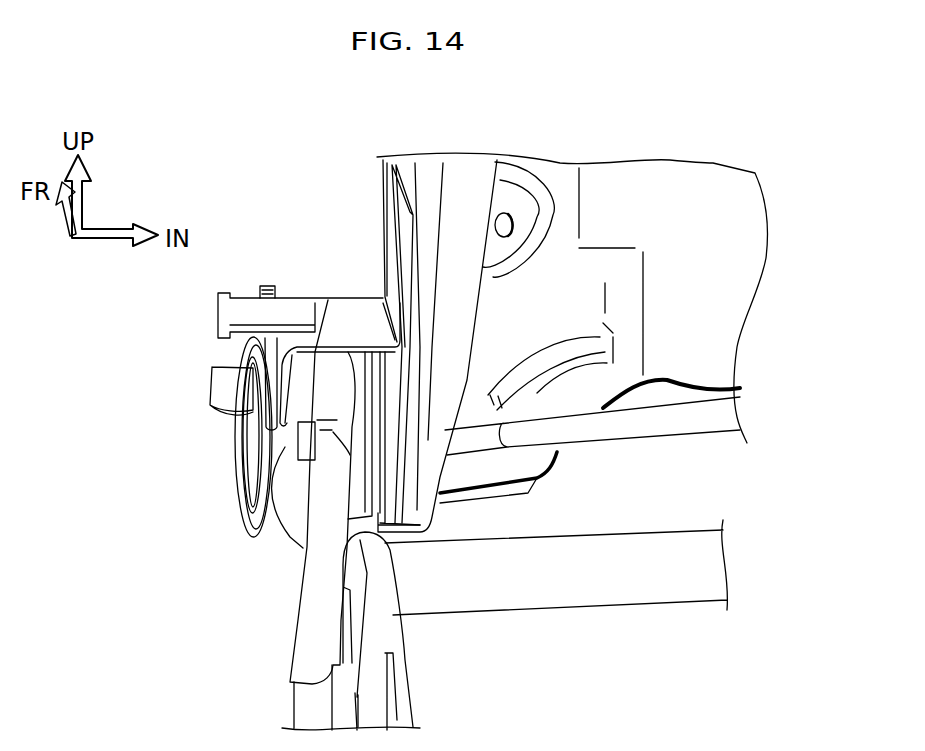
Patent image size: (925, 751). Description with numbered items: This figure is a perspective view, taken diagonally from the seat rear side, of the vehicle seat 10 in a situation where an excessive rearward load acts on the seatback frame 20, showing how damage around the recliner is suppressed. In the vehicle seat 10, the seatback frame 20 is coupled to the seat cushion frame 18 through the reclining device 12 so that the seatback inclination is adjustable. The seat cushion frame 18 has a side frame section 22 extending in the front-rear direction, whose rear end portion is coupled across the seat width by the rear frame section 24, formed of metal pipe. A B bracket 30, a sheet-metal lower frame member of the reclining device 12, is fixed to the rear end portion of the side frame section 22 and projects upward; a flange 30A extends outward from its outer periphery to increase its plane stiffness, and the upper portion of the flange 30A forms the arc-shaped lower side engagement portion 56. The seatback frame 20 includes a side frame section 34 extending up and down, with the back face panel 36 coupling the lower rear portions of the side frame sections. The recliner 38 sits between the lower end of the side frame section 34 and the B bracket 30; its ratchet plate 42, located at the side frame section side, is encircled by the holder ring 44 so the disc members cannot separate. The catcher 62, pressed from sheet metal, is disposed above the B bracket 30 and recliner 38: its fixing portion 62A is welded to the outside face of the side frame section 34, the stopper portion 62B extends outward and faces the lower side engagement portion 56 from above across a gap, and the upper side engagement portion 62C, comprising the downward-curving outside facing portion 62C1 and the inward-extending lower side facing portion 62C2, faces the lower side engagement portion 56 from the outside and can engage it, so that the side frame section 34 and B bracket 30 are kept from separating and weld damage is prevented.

The vehicle seat 10 is at (797, 268).
The reclining device 12 is at (285, 182).
The seat cushion frame 18 is at (548, 613).
The seatback frame 20 is at (631, 186).
The side frame section 22 is at (387, 653).
The rear frame section 24 is at (613, 607).
The B bracket 30 is at (298, 548).
The flange 30A is at (310, 608).
The side frame section 34 is at (467, 168).
The back face panel 36 is at (707, 192).
The recliner 38 is at (391, 406).
The ratchet plate 42 is at (383, 450).
The holder ring 44 is at (370, 380).
The lower side engagement portion 56 is at (285, 447).
The catcher 62 is at (367, 272).
The fixing portion 62A is at (393, 210).
The stopper portion 62B is at (335, 308).
The upper side engagement portion 62C is at (273, 385).
The outside facing portion 62C1 is at (278, 350).
The lower side facing portion 62C2 is at (328, 397).